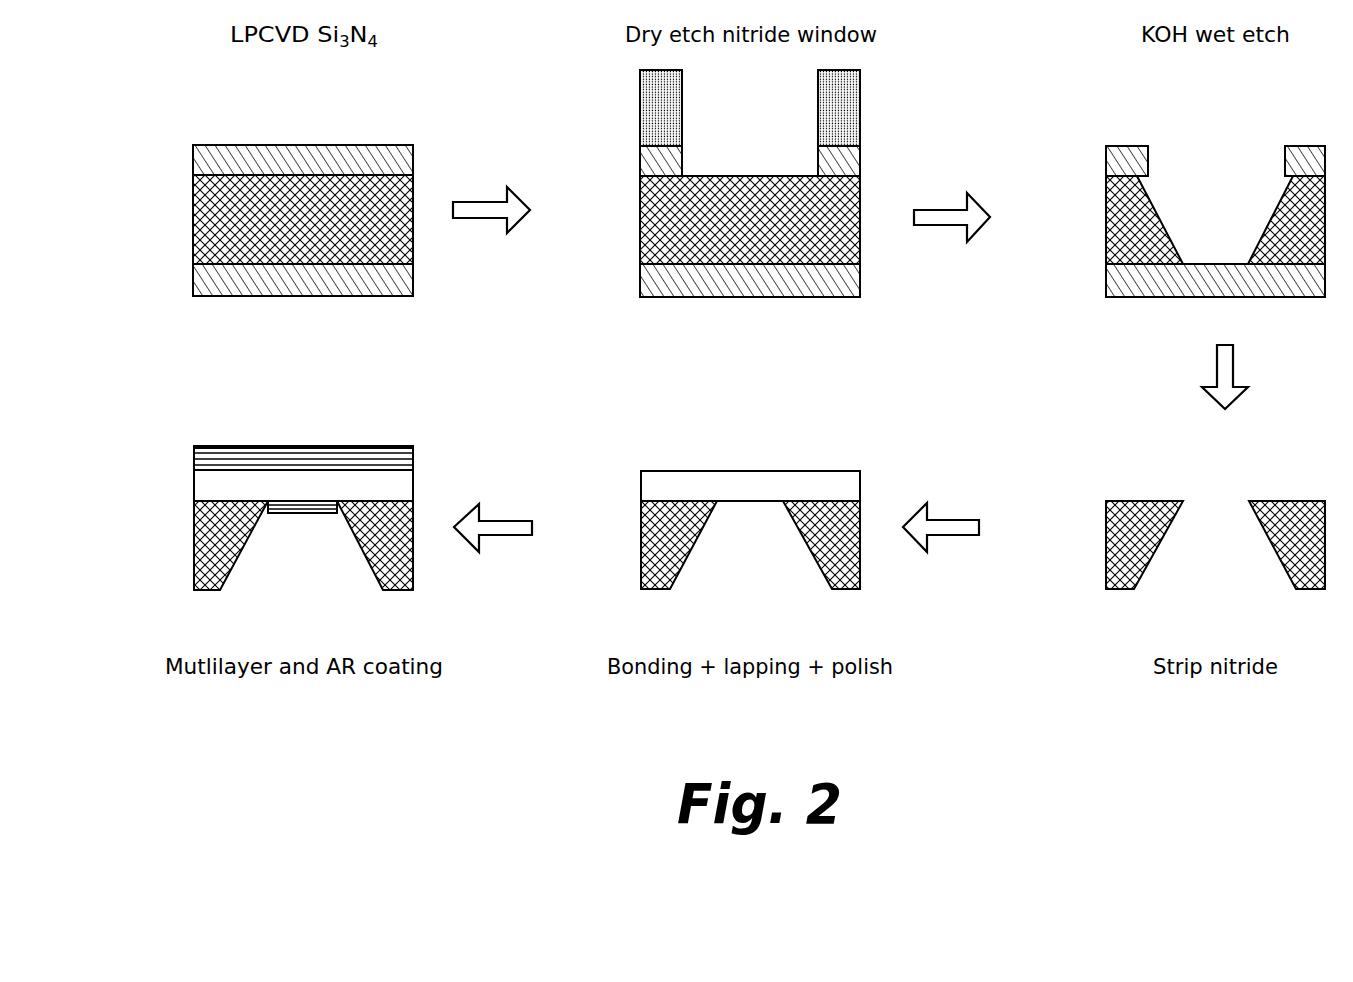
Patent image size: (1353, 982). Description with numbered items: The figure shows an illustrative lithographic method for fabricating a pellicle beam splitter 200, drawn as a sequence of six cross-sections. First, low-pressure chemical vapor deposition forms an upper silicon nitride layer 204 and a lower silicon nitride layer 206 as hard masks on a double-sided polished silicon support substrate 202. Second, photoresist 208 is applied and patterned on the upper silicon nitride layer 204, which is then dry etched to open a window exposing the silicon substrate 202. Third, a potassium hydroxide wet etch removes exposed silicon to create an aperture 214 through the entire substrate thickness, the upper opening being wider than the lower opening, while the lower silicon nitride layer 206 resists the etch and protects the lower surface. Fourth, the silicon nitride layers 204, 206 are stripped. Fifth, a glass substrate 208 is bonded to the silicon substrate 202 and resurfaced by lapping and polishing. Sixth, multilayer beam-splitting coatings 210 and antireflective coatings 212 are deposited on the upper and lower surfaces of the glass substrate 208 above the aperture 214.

The pellicle beam splitter 200 is at (398, 434).
The support substrate 202 is at (193, 222).
The upper silicon nitride layer 204 is at (193, 164).
The lower silicon nitride layer 206 is at (193, 280).
The photoresist / glass substrate 208 is at (640, 113).
The beam-splitting coatings 210 is at (194, 456).
The antireflective coatings 212 is at (287, 517).
The aperture 214 is at (1202, 207).